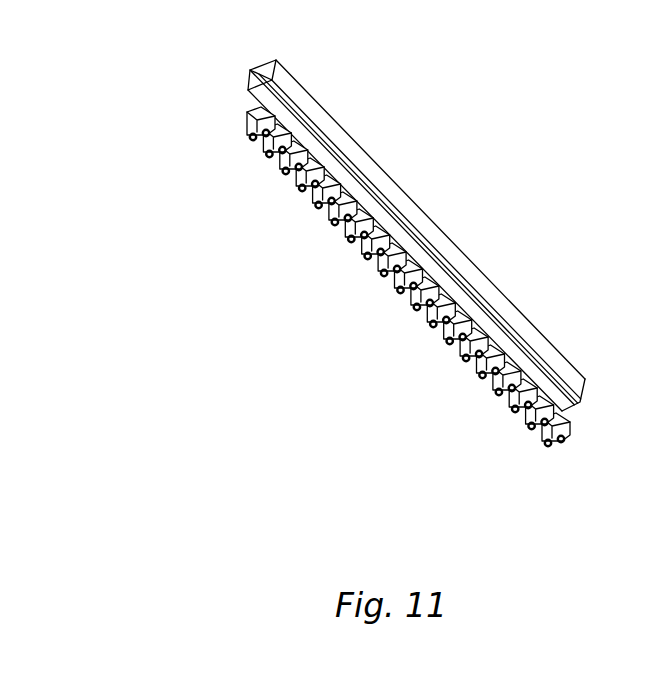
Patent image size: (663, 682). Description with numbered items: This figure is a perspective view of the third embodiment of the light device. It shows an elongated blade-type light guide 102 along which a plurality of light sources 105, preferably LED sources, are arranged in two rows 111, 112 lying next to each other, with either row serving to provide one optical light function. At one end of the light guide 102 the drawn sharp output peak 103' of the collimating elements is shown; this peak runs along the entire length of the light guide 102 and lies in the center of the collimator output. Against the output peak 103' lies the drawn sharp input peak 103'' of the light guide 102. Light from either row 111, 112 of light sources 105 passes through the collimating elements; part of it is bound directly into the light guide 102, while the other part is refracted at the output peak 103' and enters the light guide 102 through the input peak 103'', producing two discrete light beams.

The light guide 102 is at (420, 245).
The output peak 103' is at (230, 122).
The input peak 103'' is at (230, 71).
The light sources 105 is at (377, 301).
The first row of light sources 111 is at (543, 440).
The second row of light sources 112 is at (574, 428).